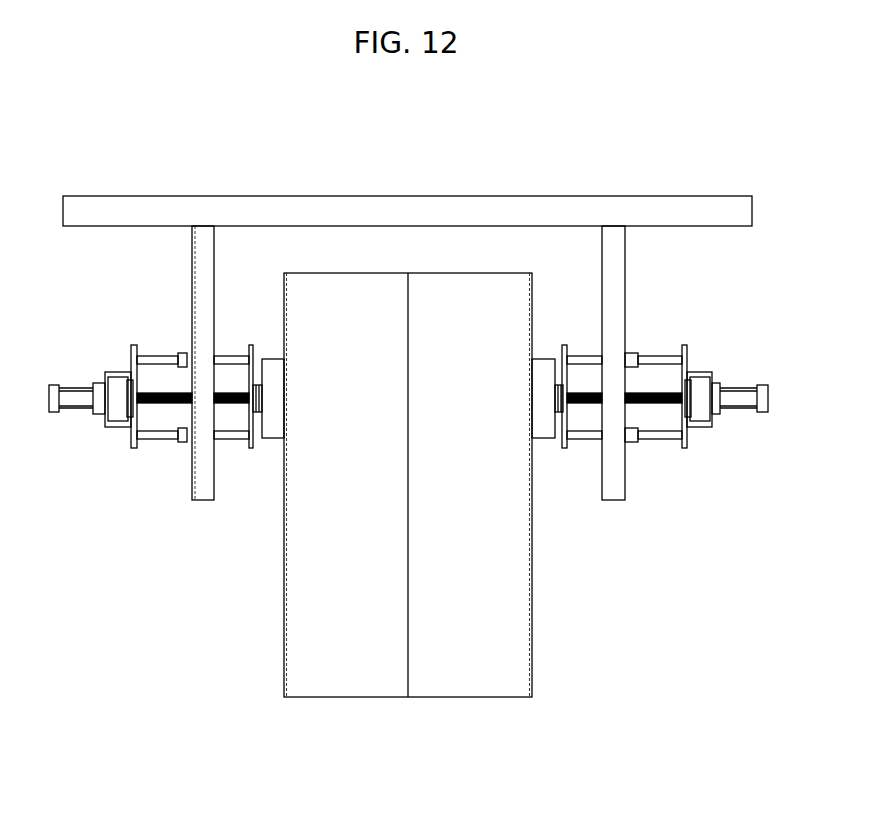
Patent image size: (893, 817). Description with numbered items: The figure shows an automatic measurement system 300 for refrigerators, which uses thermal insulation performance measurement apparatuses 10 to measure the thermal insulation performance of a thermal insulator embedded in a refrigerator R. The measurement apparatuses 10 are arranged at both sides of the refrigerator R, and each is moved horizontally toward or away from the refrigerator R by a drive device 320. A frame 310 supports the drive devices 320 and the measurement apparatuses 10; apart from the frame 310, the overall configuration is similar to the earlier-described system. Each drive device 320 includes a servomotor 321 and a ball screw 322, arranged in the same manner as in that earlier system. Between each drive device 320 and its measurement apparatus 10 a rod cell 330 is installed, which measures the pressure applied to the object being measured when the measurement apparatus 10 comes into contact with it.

The automatic measurement system for refrigerators 300 is at (356, 192).
The frame 310 is at (620, 266).
The drive device 320 is at (404, 441).
The servomotor 321 is at (110, 433).
The ball screw 322 is at (153, 403).
The rod cell 330 is at (256, 408).
The thermal insulation performance measurement apparatus 10 is at (275, 438).
The refrigerator R is at (257, 643).